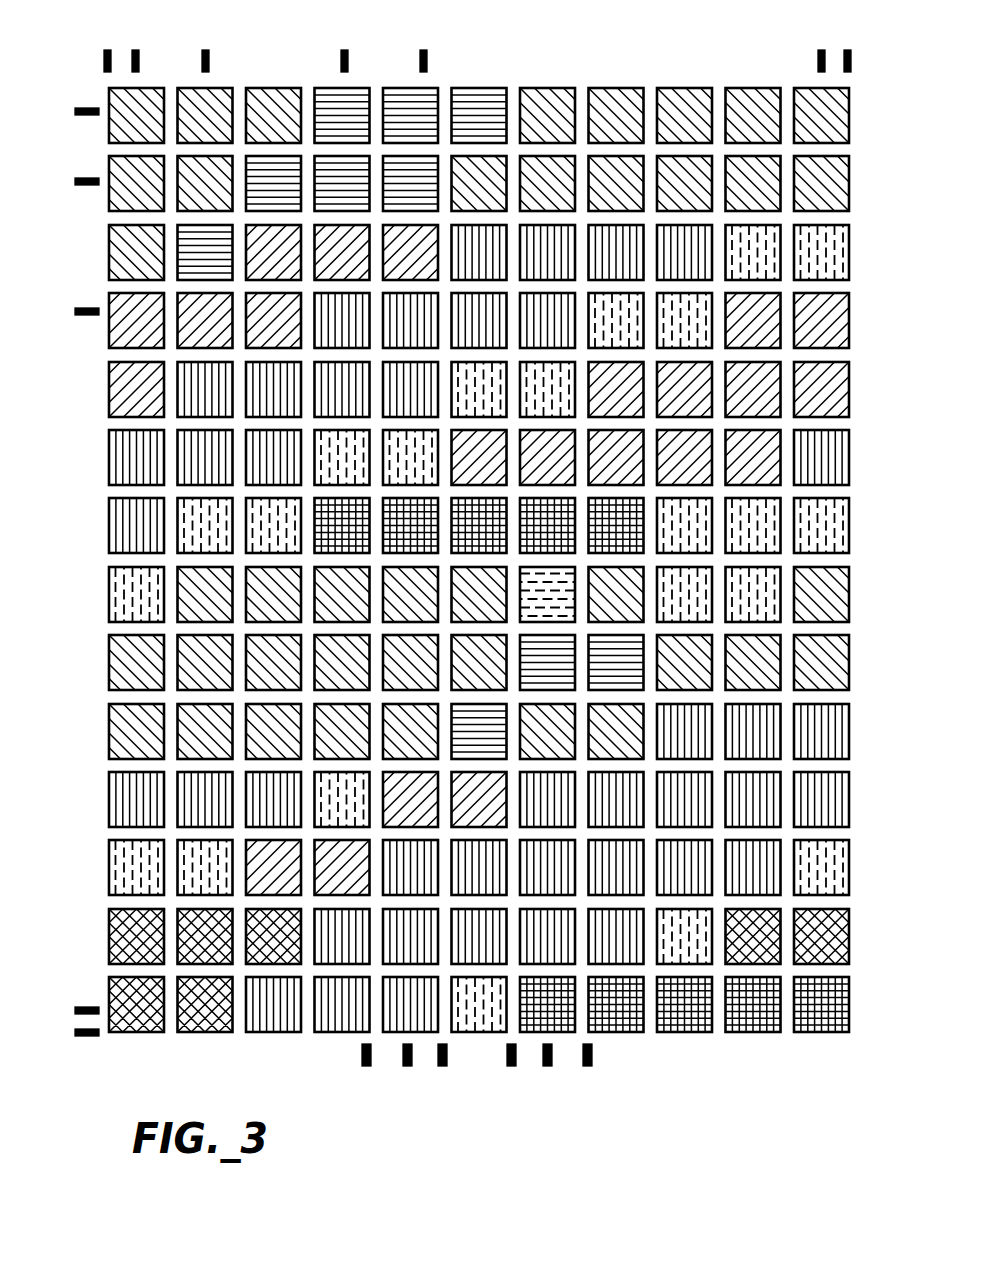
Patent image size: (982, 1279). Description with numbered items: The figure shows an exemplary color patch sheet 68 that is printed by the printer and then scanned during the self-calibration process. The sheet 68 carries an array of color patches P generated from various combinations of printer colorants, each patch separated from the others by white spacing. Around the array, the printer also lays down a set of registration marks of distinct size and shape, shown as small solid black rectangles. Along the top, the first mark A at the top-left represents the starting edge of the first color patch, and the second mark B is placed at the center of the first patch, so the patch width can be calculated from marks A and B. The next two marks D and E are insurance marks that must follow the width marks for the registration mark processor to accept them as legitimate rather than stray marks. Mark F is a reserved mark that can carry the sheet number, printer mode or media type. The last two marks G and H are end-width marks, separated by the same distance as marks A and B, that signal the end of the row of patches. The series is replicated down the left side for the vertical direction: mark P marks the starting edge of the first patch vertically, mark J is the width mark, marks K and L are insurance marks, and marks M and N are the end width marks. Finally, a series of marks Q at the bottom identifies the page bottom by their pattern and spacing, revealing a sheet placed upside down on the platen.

The color patch sheet 68 is at (671, 31).
The first mark A is at (107, 50).
The second mark B is at (136, 50).
The insurance mark D is at (206, 50).
The insurance mark E is at (345, 50).
The reserved mark F is at (424, 50).
The end-width mark G is at (822, 50).
The end-width mark H is at (848, 50).
The width mark J is at (81, 108).
The insurance mark K is at (81, 178).
The insurance mark L is at (81, 308).
The end width mark M is at (78, 1007).
The end width mark N is at (78, 1029).
The color patches P is at (553, 112).
The series of marks Q is at (598, 1073).